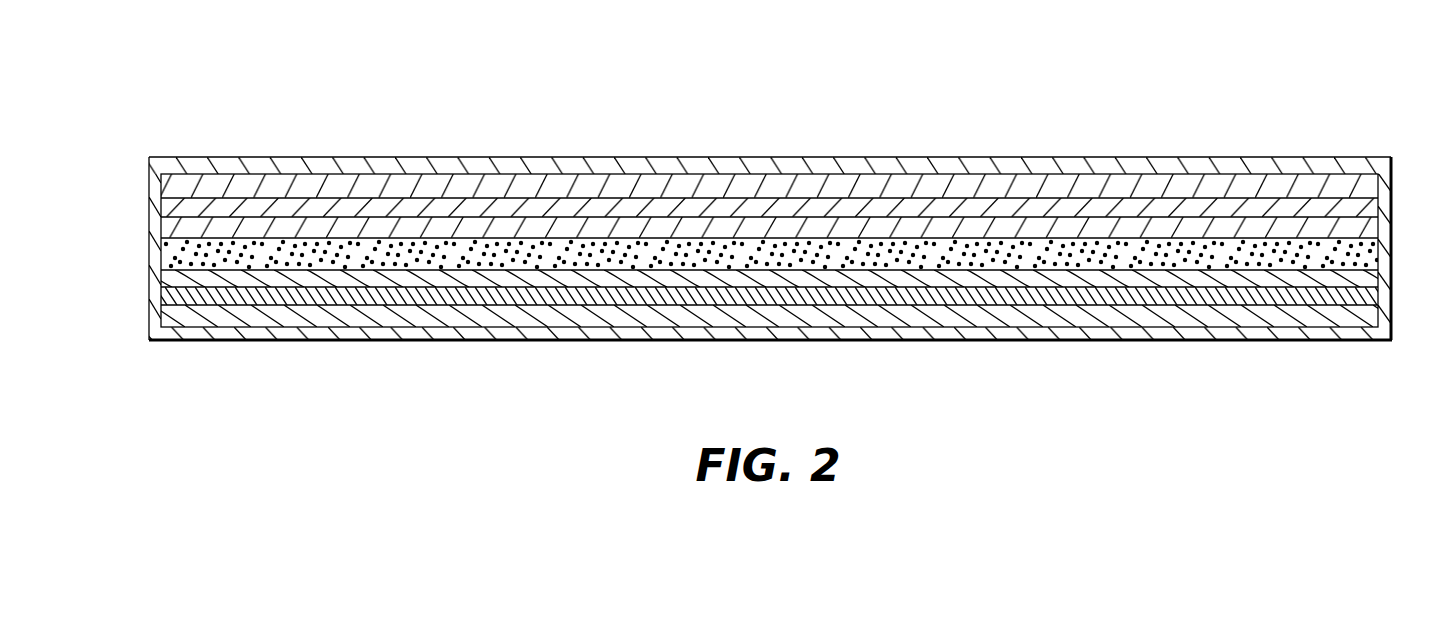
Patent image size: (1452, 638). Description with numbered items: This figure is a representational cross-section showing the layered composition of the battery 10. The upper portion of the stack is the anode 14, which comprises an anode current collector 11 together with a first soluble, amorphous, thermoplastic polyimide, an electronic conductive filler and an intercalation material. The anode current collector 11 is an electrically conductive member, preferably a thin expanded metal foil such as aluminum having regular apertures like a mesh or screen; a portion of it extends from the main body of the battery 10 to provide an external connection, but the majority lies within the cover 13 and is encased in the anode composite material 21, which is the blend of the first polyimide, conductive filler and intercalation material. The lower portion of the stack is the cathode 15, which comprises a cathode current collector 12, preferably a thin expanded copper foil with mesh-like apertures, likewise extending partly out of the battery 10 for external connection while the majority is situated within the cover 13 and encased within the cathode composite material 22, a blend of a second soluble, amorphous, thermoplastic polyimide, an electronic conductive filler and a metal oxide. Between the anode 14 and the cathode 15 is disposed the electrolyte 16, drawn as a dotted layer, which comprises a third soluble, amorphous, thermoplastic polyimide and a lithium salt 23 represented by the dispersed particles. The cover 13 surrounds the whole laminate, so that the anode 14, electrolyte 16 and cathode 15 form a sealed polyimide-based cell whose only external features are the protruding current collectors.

The battery 10 is at (732, 118).
The anode current collector 11 is at (277, 207).
The cathode current collector 12 is at (192, 297).
The cover 13 is at (1222, 163).
The anode 14 is at (805, 147).
The cathode 15 is at (805, 352).
The electrolyte 16 is at (778, 318).
The anode composite material 21 is at (523, 230).
The cathode composite material 22 is at (582, 278).
The lithium salt 23 is at (182, 260).